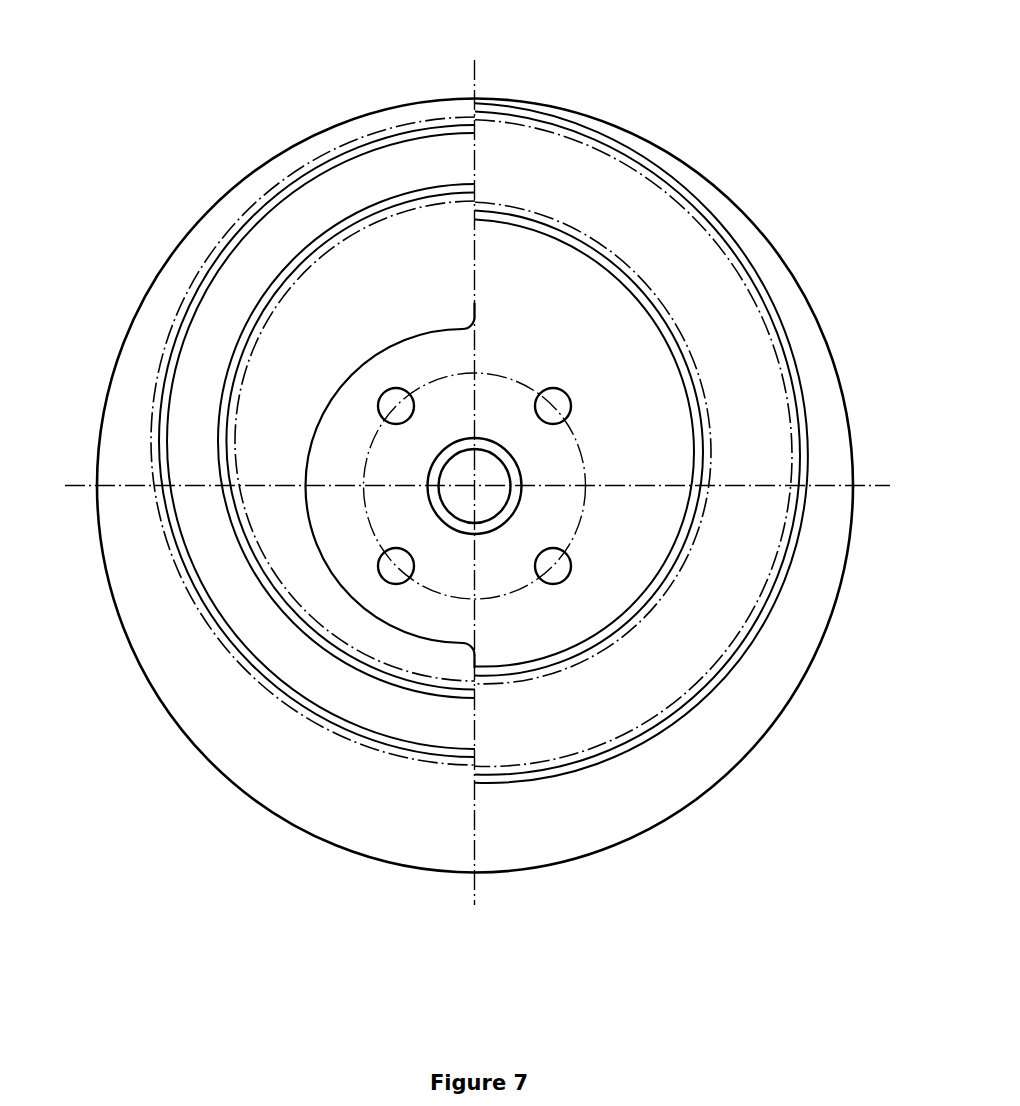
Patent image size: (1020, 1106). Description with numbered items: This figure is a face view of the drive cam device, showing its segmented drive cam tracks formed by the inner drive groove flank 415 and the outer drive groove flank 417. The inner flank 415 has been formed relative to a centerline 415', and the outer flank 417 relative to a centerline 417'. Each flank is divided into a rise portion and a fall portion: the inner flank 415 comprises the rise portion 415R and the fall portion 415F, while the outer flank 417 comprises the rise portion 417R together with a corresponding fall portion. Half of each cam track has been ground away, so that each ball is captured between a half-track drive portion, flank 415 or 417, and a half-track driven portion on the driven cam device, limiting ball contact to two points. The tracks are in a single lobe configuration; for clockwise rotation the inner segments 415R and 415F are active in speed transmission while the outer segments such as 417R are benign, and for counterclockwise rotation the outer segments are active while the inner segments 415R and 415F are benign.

The drive groove flank 415 is at (261, 441).
The rise portion of drive groove flank 415R is at (345, 225).
The drive groove flank 417 is at (272, 441).
The rise portion of drive groove flank 417R is at (237, 245).
The centerline 415' is at (614, 359).
The fall portion of drive groove flank 415F is at (613, 273).
The centerline 417' is at (703, 449).